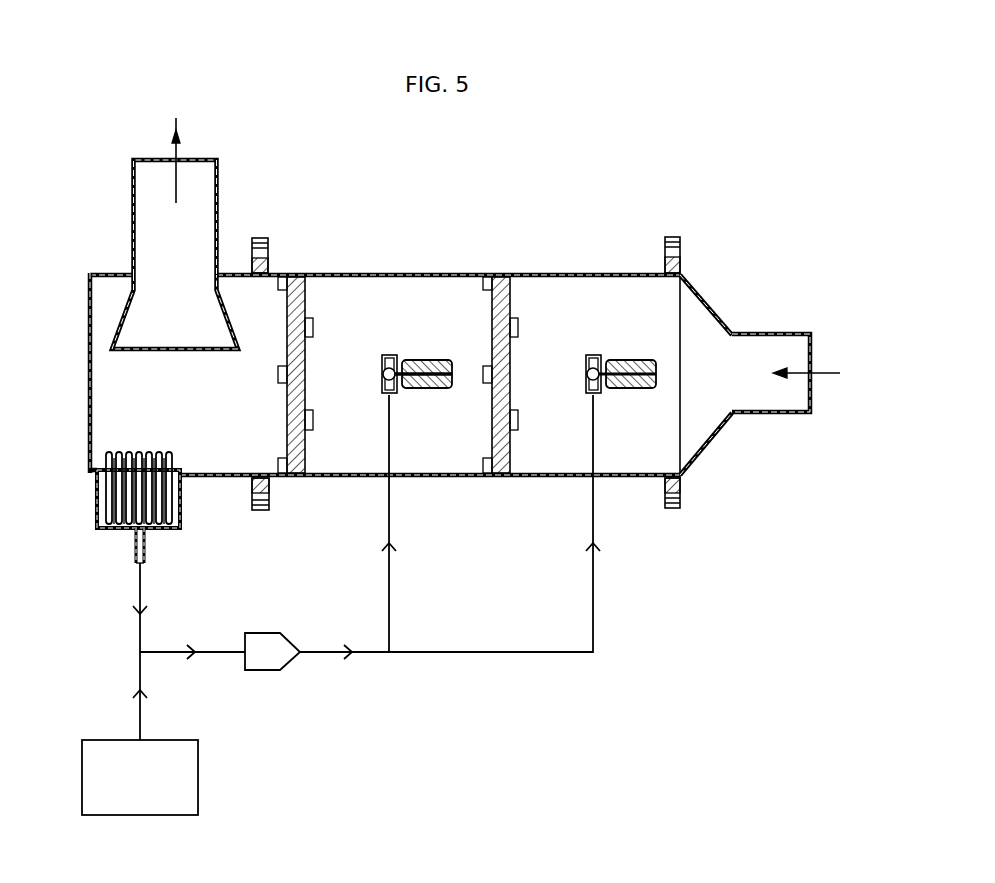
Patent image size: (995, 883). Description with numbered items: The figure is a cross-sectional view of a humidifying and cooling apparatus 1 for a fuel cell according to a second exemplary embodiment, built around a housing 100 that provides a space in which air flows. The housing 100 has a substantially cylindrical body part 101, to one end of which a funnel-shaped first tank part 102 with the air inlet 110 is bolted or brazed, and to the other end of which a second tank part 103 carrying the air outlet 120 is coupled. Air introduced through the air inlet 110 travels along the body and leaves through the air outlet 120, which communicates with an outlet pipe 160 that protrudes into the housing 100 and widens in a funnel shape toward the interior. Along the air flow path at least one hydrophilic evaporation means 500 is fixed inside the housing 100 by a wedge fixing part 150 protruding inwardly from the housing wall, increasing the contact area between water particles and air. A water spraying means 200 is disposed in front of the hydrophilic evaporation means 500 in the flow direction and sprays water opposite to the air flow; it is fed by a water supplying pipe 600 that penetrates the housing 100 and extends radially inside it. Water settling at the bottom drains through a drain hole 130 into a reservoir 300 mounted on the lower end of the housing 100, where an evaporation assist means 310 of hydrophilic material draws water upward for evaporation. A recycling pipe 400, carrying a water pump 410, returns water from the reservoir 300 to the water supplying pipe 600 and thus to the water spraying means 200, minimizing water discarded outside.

The humidifying and cooling apparatus 1 is at (450, 198).
The housing 100 is at (598, 273).
The body part 101 is at (390, 273).
The first tank part 102 is at (708, 440).
The second tank part 103 is at (225, 272).
The air inlet 110 is at (793, 414).
The air outlet 120 is at (221, 173).
The drain hole 130 is at (92, 470).
The wedge fixing part 150 is at (487, 276).
The outlet pipe 160 is at (120, 318).
The water spraying means 200 is at (632, 360).
The reservoir 300 is at (97, 505).
The evaporation assist means 310 is at (180, 490).
The recycling pipe 400 is at (490, 653).
The water pump 410 is at (260, 671).
The hydrophilic evaporation means 500 is at (505, 280).
The water supplying pipe 600 is at (593, 355).